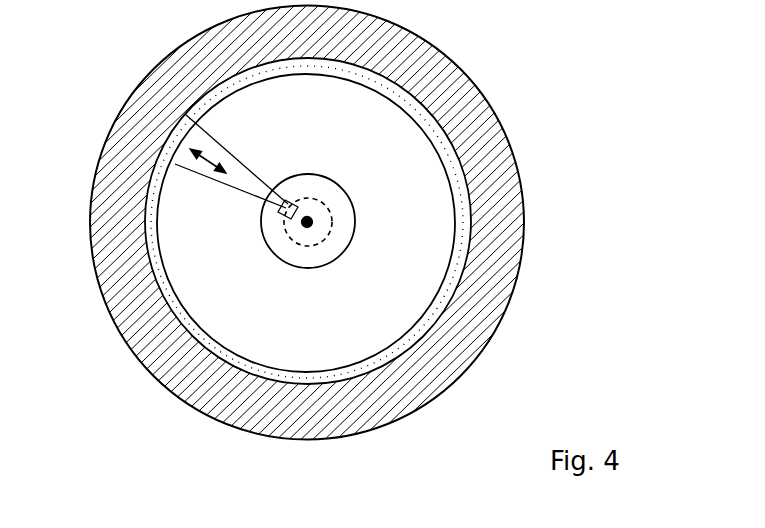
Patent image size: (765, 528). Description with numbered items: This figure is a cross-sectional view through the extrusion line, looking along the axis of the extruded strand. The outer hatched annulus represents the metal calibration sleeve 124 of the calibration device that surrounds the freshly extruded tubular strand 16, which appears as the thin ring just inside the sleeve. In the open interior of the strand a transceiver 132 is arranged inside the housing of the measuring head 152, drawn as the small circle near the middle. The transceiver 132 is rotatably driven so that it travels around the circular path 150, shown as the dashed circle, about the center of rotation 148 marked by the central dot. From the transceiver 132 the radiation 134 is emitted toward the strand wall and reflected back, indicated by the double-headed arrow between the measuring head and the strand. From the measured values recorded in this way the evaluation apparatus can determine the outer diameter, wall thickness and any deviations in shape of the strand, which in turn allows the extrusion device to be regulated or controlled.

The tubular strand 16 is at (433, 123).
The metal calibration sleeve 124 is at (155, 344).
The transceiver 132 is at (298, 177).
The radiation emitted by the transceiver and reflected back 134 is at (175, 164).
The center of rotation 148 is at (313, 212).
The circular path 150 is at (331, 237).
The housing of the measuring head 152 is at (312, 270).